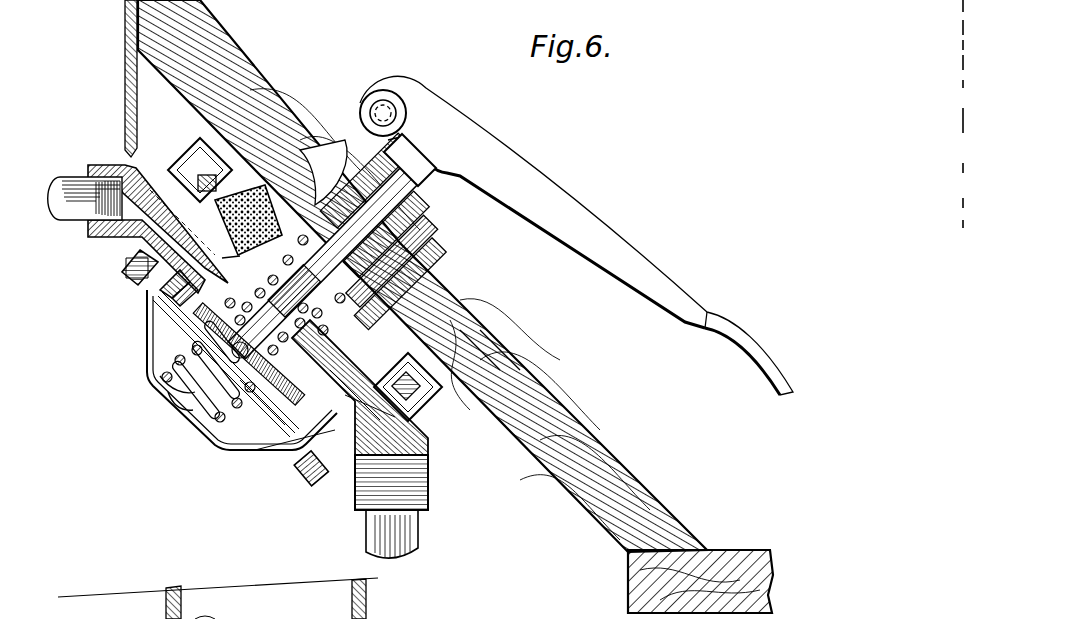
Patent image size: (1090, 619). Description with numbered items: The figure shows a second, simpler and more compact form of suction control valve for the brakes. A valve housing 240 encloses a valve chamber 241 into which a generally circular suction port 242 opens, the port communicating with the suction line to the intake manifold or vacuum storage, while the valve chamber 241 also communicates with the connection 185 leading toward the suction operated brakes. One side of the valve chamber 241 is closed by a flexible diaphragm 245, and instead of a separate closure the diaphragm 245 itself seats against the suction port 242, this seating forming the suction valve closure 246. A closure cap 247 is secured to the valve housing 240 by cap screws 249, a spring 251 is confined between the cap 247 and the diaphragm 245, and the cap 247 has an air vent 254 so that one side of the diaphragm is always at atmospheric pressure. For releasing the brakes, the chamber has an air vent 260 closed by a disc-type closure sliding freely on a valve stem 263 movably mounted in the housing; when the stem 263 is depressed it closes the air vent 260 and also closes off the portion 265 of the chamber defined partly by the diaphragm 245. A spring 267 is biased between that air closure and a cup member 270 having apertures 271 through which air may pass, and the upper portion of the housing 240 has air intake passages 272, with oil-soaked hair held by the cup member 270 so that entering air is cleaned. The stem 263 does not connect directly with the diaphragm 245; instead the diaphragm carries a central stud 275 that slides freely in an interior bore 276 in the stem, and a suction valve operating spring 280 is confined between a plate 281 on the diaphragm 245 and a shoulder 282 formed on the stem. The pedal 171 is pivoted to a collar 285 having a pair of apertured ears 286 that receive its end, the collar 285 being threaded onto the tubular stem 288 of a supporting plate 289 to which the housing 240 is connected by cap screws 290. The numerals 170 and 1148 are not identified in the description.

The pivot pin 170 is at (275, 135).
The apertured ears 286 is at (336, 140).
The interior bore 276 is at (322, 165).
The cap screws 290 is at (205, 173).
The pedal 171 is at (487, 136).
The valve stem 263 is at (420, 194).
The collar 285 is at (430, 238).
The tubular stem 288 is at (420, 254).
The supporting plate 289 is at (430, 262).
The shoulder 282 is at (248, 220).
The suction valve operating spring 280 is at (242, 239).
The spring 267 is at (408, 332).
The cup member 270 is at (470, 334).
The apertures 271 is at (467, 340).
The channel member 1148 is at (73, 218).
The cap screws 249 is at (130, 285).
The flexible diaphragm 245 is at (150, 300).
The diaphragm seating against suction port 246 is at (200, 317).
The plate 281 is at (200, 333).
The closure cap 247 is at (163, 377).
The air vent 254 is at (173, 407).
The spring 251 is at (220, 437).
The suction port 242 is at (237, 447).
The central stud 275 is at (255, 402).
The valve chamber 241 is at (267, 450).
The air intake passages 272 is at (399, 388).
The valve housing 240 is at (397, 417).
The air vent 260 is at (380, 437).
The portion of the valve chamber 265 is at (397, 457).
The connection 185 is at (413, 528).